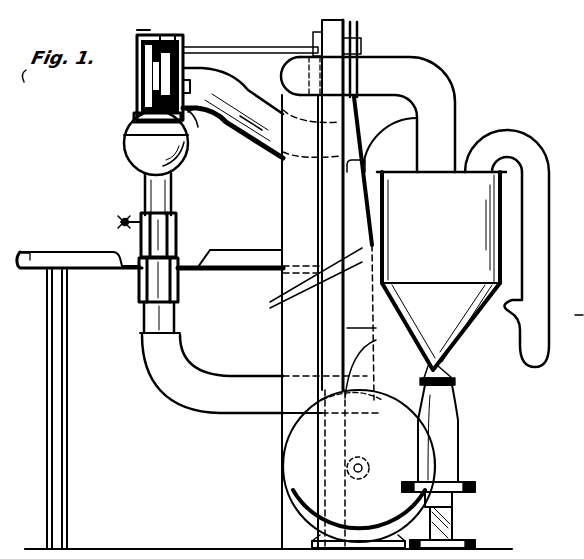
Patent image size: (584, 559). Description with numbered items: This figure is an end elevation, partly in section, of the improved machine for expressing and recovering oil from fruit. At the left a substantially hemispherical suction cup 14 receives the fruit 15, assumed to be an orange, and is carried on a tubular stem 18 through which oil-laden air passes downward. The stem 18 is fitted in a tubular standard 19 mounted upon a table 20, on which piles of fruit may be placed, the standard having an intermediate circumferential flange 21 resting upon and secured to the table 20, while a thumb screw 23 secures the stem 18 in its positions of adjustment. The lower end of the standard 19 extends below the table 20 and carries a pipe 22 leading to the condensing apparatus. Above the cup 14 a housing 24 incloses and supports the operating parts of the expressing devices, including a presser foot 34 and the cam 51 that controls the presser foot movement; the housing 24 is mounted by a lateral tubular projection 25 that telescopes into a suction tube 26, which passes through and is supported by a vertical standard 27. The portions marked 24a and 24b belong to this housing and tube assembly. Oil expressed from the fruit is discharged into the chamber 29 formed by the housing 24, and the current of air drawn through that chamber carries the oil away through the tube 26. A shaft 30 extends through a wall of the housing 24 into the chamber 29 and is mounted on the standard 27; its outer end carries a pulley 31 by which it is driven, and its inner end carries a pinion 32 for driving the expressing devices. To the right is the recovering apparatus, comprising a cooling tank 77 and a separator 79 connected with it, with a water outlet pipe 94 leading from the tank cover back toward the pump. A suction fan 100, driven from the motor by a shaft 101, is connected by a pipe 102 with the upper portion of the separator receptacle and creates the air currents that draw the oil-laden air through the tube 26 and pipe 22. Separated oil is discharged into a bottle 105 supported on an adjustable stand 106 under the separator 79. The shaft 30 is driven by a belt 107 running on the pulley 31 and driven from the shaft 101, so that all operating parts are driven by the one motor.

The suction cup 14 is at (125, 147).
The fruit 15 is at (133, 117).
The tubular stem 18 is at (143, 183).
The tubular standard 19 is at (178, 238).
The table 20 is at (190, 272).
The circumferential flange 21 is at (186, 262).
The pipe 22 is at (218, 413).
The thumb screw 23 is at (121, 222).
The housing 24 is at (178, 36).
The arm portion 24a is at (137, 93).
The curved tube 24b is at (184, 70).
The lateral tubular projection 25 is at (197, 113).
The suction tube 26 is at (253, 132).
The vertical standard 27 is at (325, 178).
The chamber 29 is at (158, 36).
The shaft 30 is at (287, 47).
The pulley 31 is at (357, 24).
The pinion 32 is at (137, 34).
The presser foot 34 is at (186, 153).
The cam 51 is at (163, 36).
The cooling tank 77 is at (496, 330).
The separator 79 is at (441, 227).
The outlet pipe 94 is at (548, 170).
The suction fan 100 is at (292, 449).
The shaft 101 is at (355, 453).
The pipe 102 is at (448, 95).
The bottle 105 is at (456, 397).
The adjustable stand 106 is at (466, 486).
The belt 107 is at (297, 280).